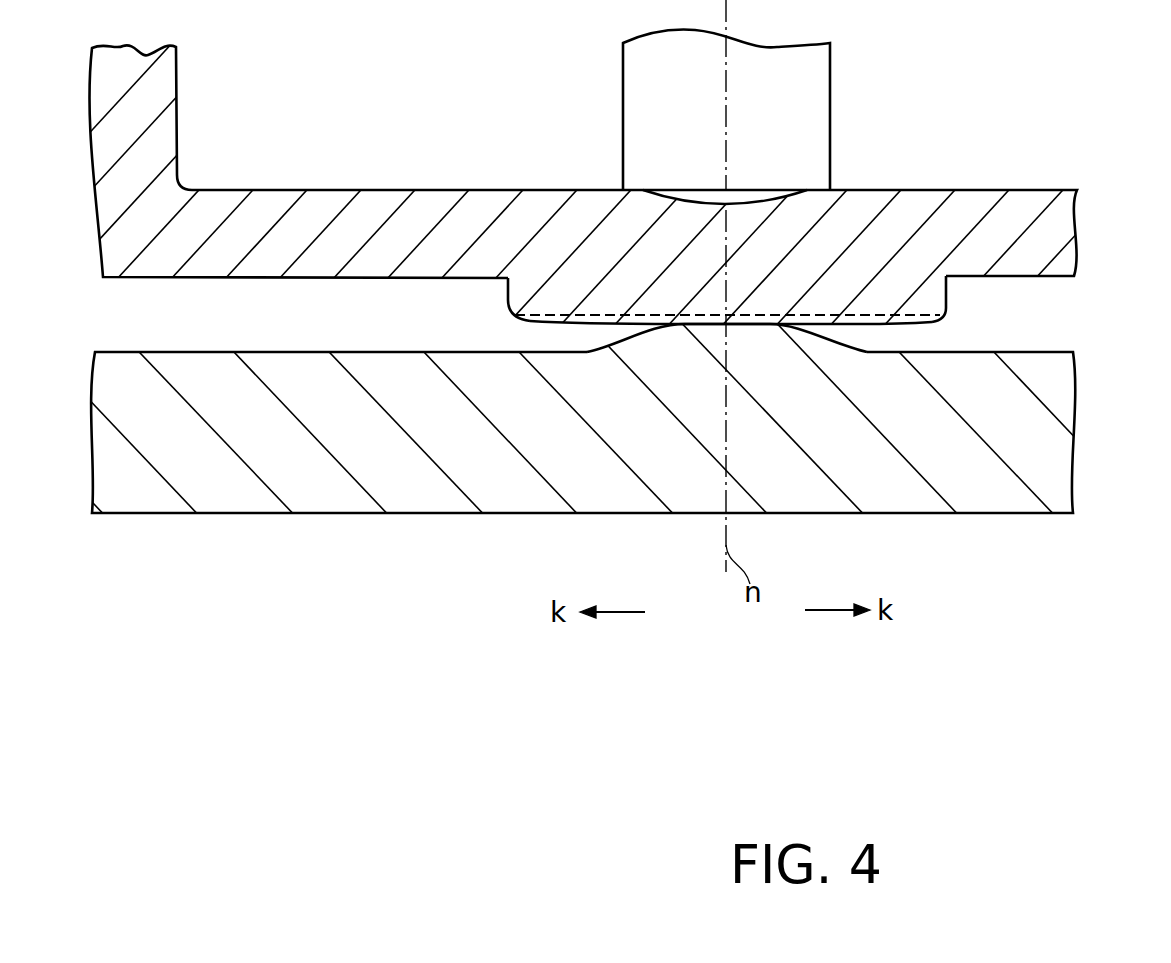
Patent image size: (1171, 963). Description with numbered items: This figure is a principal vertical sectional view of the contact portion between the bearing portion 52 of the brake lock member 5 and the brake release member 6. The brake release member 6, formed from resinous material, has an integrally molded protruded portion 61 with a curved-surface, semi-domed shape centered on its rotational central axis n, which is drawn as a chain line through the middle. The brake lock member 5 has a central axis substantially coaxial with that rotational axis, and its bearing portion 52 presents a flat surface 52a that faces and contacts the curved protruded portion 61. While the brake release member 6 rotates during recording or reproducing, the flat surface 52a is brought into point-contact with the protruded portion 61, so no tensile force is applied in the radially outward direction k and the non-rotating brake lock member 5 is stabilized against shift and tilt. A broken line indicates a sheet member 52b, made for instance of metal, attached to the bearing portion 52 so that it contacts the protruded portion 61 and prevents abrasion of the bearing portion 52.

The brake lock member 5 is at (322, 190).
The bearing portion 52 is at (948, 290).
The flat surface 52a is at (862, 325).
The sheet member 52b is at (515, 319).
The brake release member 6 is at (250, 513).
The protruded portion 61 is at (750, 343).